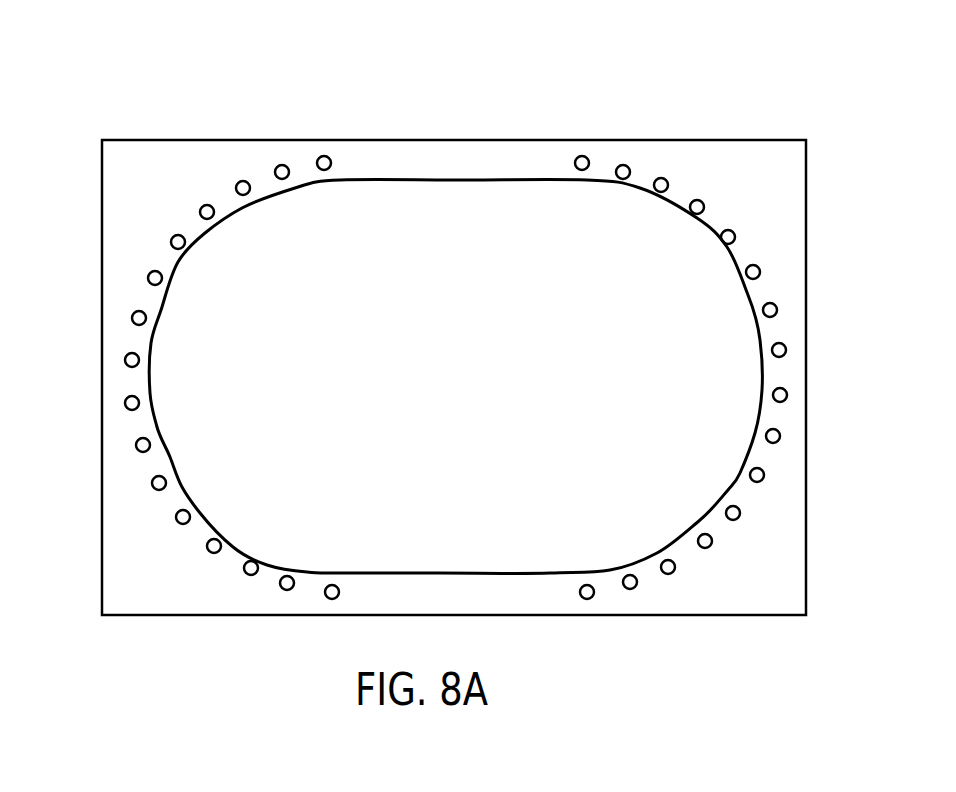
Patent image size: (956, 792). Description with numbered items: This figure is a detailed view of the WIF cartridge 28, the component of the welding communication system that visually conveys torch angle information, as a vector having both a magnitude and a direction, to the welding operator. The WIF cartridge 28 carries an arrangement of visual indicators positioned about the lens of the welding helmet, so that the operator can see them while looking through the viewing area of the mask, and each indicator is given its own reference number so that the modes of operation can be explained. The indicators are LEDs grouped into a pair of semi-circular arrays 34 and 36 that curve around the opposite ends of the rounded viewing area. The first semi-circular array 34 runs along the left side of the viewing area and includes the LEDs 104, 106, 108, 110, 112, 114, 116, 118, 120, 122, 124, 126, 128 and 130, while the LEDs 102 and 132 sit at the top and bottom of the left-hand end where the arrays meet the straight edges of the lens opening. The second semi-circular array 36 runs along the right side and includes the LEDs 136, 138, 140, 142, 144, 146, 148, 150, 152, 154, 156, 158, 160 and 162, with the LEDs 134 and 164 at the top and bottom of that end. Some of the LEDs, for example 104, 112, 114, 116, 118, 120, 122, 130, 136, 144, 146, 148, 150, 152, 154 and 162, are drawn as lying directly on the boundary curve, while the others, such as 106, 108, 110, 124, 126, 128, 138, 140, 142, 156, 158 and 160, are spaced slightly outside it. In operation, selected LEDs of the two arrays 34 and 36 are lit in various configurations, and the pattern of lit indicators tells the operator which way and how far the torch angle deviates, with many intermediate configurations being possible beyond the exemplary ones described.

The WIF cartridge 28 is at (590, 92).
The semi-circular array 34 is at (80, 358).
The semi-circular array 36 is at (827, 360).
The LED 102 is at (331, 164).
The LED 104 is at (288, 177).
The LED 106 is at (238, 183).
The LED 108 is at (202, 206).
The LED 110 is at (172, 237).
The LED 112 is at (160, 283).
The LED 114 is at (145, 322).
The LED 116 is at (139, 363).
The LED 118 is at (139, 406).
The LED 120 is at (149, 449).
The LED 122 is at (166, 484).
The LED 124 is at (176, 515).
The LED 126 is at (207, 545).
The LED 128 is at (245, 573).
The LED 130 is at (283, 577).
The LED 132 is at (339, 593).
The LED 134 is at (575, 163).
The LED 136 is at (618, 178).
The LED 138 is at (666, 179).
The LED 140 is at (702, 201).
The LED 142 is at (733, 232).
The LED 144 is at (748, 277).
The LED 146 is at (764, 315).
The LED 148 is at (773, 354).
The LED 150 is at (774, 399).
The LED 152 is at (767, 440).
The LED 154 is at (750, 477).
The LED 156 is at (739, 518).
The LED 158 is at (711, 546).
The LED 160 is at (675, 572).
The LED 162 is at (636, 577).
The LED 164 is at (580, 592).